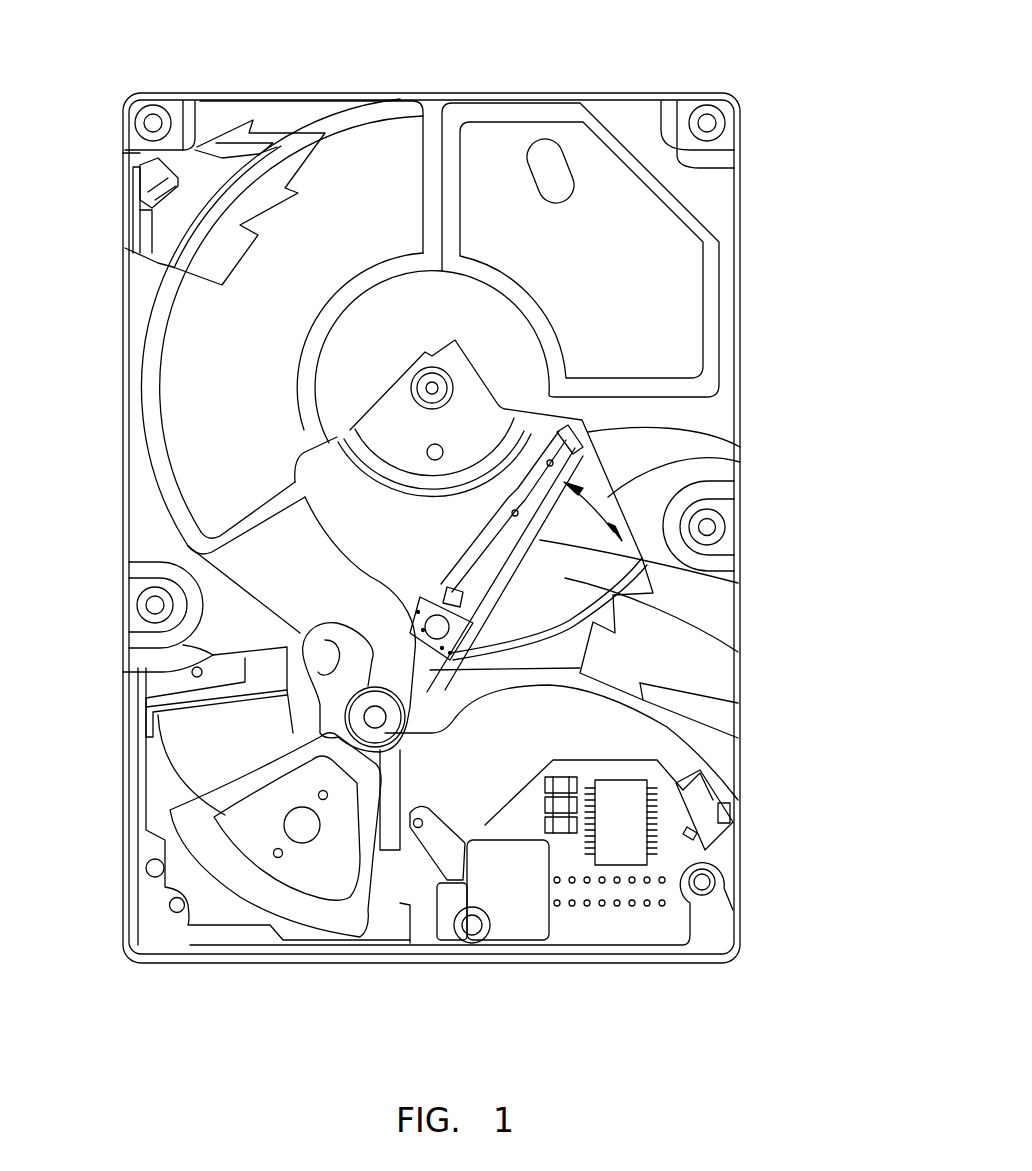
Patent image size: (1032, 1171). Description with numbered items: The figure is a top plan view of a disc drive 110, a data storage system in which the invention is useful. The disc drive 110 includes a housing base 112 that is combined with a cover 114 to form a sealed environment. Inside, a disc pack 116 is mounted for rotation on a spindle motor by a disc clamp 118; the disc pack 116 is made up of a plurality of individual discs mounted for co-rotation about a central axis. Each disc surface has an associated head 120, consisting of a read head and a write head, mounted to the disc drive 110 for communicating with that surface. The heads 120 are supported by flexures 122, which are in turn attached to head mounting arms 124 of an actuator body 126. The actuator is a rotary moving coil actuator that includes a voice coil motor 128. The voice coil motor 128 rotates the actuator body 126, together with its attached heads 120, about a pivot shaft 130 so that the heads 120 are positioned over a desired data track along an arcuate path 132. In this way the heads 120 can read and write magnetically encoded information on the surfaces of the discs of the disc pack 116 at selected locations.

The disc drive 110 is at (110, 488).
The housing base 112 is at (743, 882).
The cover 114 is at (431, 108).
The disc pack 116 is at (738, 652).
The disc clamp 118 is at (470, 408).
The head 120 is at (740, 447).
The flexure 122 is at (738, 583).
The head mounting arm 124 is at (640, 684).
The actuator body 126 is at (333, 662).
The voice coil motor 128 is at (170, 790).
The pivot shaft 130 is at (378, 717).
The arcuate path 132 is at (740, 480).